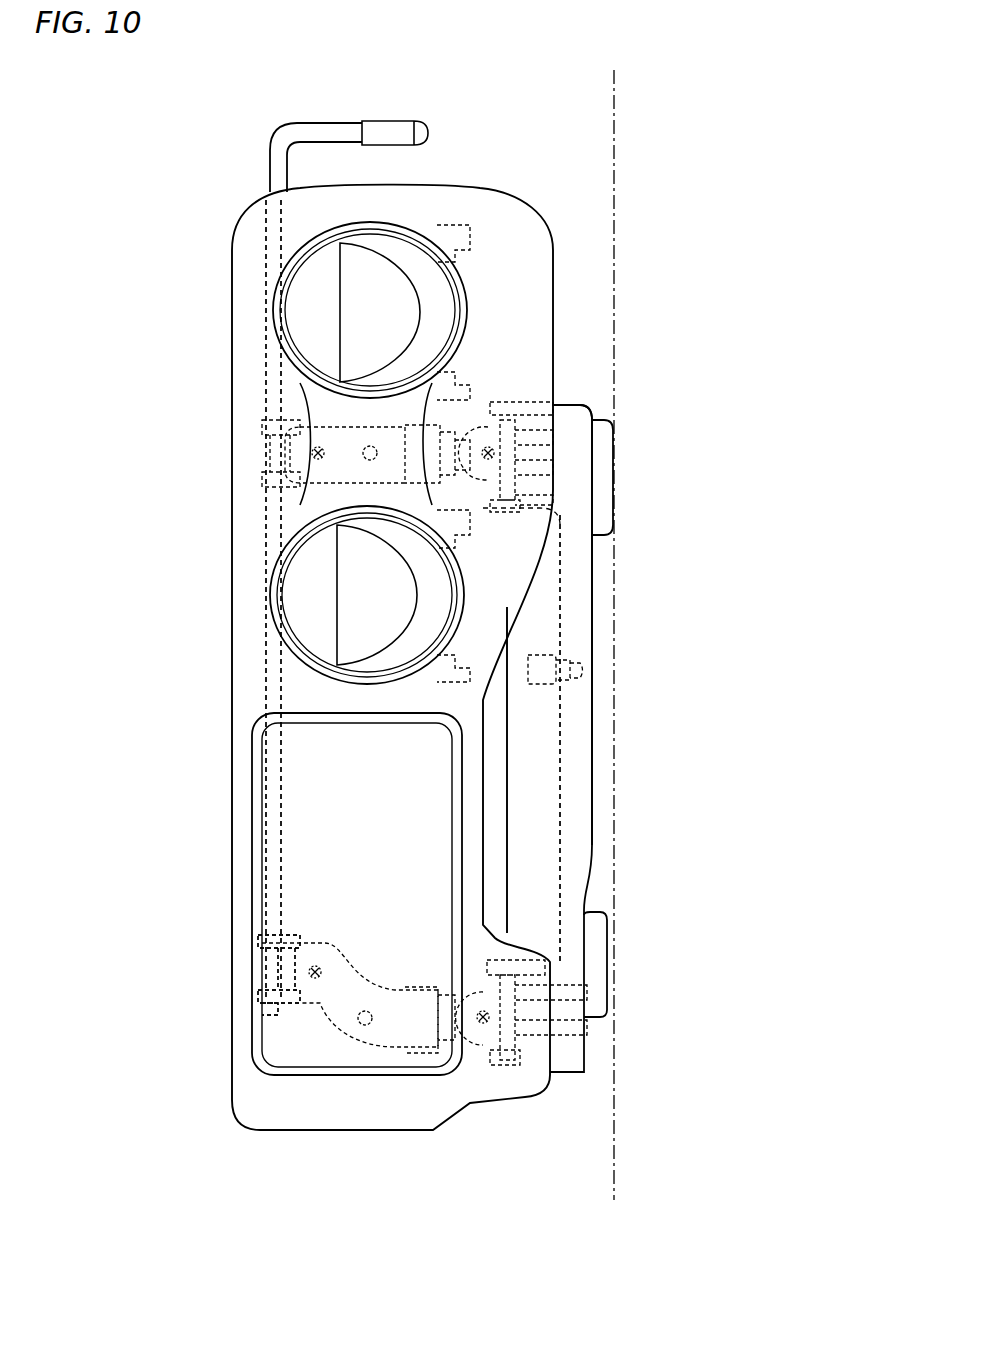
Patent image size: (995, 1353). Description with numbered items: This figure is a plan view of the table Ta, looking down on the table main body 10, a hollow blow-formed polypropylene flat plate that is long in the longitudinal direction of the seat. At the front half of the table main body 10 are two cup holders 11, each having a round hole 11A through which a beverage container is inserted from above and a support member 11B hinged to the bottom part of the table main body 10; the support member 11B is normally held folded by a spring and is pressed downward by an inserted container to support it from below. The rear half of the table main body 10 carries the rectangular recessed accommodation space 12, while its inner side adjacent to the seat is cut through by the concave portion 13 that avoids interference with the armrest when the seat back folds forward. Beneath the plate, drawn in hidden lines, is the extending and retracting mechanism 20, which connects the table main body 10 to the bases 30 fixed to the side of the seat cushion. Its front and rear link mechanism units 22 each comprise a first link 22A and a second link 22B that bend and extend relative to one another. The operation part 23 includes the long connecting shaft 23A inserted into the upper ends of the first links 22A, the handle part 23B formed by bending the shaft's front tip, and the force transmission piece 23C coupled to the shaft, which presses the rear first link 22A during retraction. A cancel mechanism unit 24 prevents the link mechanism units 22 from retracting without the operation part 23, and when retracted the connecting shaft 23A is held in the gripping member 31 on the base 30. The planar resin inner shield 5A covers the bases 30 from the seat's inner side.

The table Ta is at (183, 137).
The table main body 10 is at (498, 190).
The cup holder 11 is at (137, 255).
The round hole 11A is at (313, 334).
The support member 11B is at (316, 291).
The recessed accommodation space 12 is at (320, 872).
The concave portion 13 is at (480, 815).
The extending and retracting mechanism 20 is at (540, 387).
The link mechanism unit 22 is at (453, 443).
The first link 22A is at (340, 447).
The second link 22B is at (470, 447).
The operation part 23 is at (290, 125).
The connecting shaft 23A is at (270, 510).
The handle part 23B is at (396, 127).
The force transmission piece 23C is at (285, 978).
The cancel mechanism unit 24 is at (262, 962).
The base 30 is at (575, 606).
The gripping member 31 is at (560, 662).
The inner shield 5A is at (545, 738).